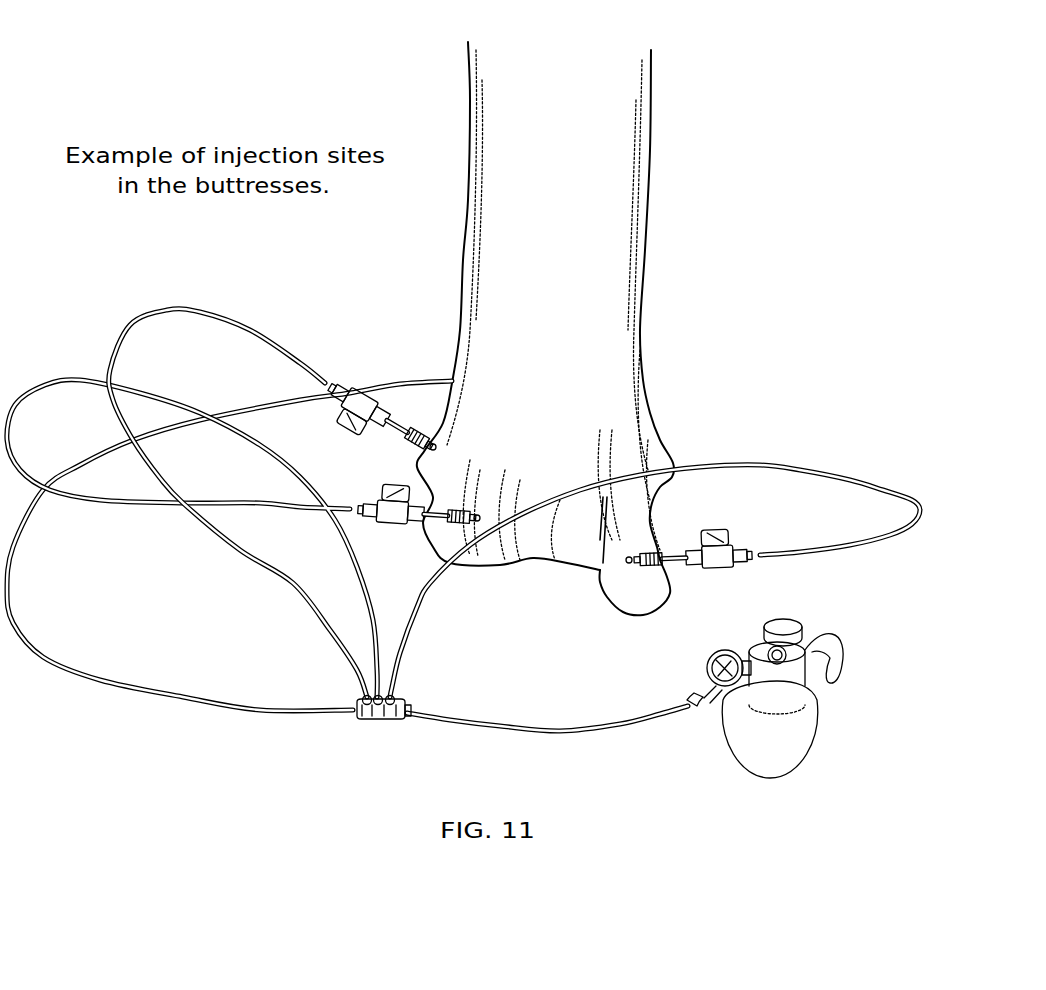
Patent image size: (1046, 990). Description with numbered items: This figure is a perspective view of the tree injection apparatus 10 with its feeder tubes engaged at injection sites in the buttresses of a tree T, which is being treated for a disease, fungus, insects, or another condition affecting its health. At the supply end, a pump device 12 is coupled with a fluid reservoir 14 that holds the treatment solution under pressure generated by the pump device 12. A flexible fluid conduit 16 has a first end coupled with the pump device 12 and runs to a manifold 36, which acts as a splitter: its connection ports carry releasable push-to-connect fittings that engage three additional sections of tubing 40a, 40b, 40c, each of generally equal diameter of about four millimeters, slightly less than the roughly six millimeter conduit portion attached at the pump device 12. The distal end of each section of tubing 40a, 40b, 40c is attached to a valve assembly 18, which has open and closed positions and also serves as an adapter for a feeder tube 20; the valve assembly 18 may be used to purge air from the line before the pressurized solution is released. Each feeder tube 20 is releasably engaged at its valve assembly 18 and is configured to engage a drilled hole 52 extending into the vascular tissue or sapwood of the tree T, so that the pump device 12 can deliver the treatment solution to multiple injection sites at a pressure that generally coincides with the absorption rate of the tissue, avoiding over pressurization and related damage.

The tree T is at (557, 237).
The tree injection apparatus 10 is at (463, 591).
The pump device 12 is at (802, 670).
The fluid reservoir 14 is at (780, 737).
The flexible fluid conduit 16 is at (568, 732).
The valve assembly 18 is at (360, 397).
The feeder tube 20 is at (432, 445).
The manifold 36 is at (377, 721).
The additional section of tubing 40a is at (263, 590).
The additional section of tubing 40b is at (353, 563).
The additional section of tubing 40c is at (427, 600).
The drilled hole 52 is at (479, 518).